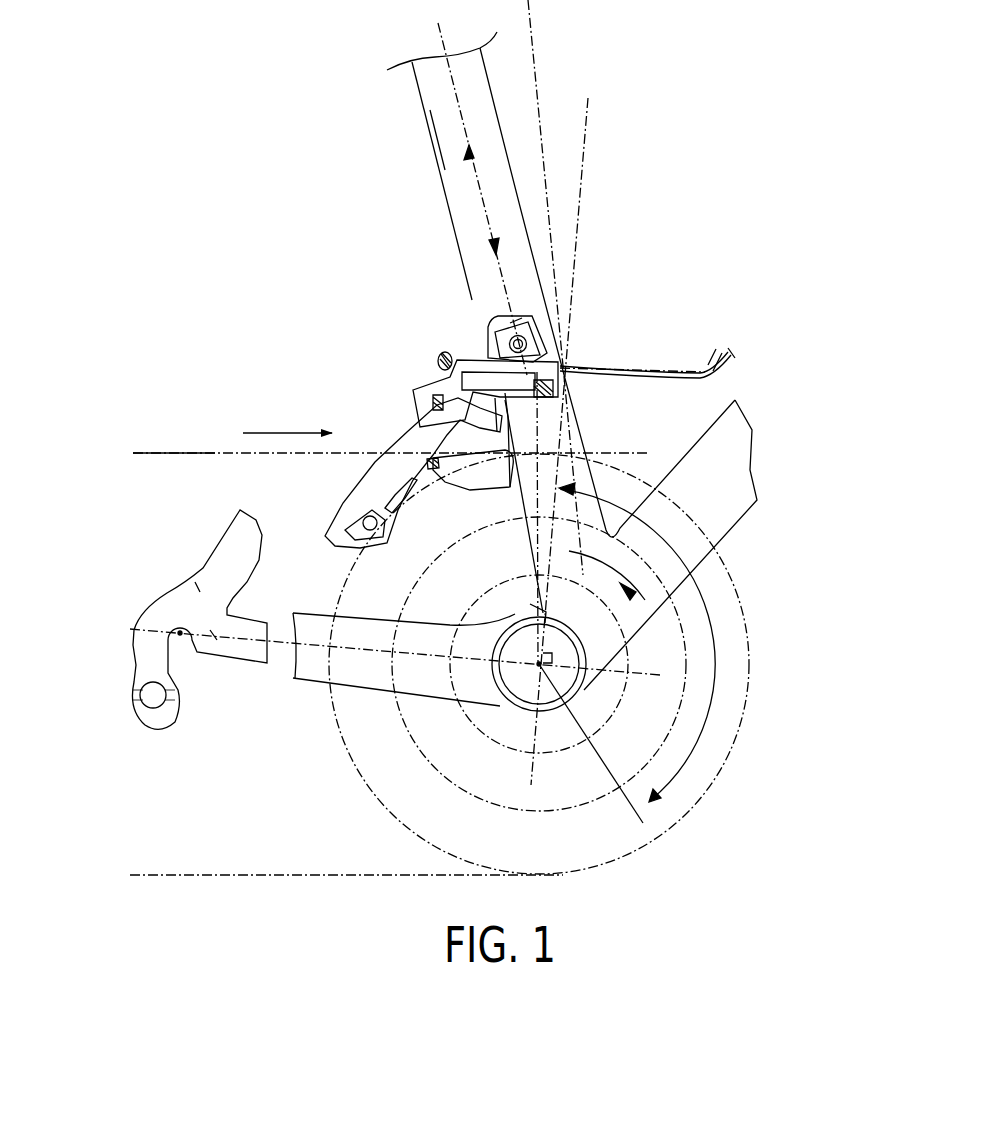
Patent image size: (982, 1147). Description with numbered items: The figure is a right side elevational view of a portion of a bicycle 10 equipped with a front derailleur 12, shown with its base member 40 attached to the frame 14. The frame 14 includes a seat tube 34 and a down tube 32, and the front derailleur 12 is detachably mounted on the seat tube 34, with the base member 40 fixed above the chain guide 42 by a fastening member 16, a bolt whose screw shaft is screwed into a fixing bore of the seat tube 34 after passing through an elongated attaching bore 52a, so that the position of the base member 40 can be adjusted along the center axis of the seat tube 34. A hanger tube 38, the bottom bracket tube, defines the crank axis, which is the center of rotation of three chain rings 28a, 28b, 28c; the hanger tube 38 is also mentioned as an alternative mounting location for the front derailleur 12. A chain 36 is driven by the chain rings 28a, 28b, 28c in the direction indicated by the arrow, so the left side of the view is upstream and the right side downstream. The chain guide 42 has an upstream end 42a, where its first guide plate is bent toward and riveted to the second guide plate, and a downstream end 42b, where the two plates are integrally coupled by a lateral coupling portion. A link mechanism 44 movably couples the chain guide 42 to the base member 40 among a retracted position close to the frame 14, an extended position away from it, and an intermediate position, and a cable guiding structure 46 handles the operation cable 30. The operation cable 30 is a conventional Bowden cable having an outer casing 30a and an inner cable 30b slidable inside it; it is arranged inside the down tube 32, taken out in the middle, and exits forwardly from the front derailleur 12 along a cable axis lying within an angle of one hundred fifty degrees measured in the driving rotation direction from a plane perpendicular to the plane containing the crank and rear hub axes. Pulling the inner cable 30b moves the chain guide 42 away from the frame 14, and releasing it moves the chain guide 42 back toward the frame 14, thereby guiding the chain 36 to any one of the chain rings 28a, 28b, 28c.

The bicycle 10 is at (398, 180).
The front derailleur 12 is at (335, 500).
The frame 14 is at (500, 105).
The fastening member 16 is at (490, 350).
The chain ring 28a is at (333, 745).
The chain ring 28b is at (397, 713).
The chain ring 28c is at (457, 720).
The operation cable 30 is at (660, 392).
The outer casing 30a is at (685, 370).
The inner cable 30b is at (722, 358).
The down tube 32 is at (685, 456).
The seat tube 34 is at (428, 126).
The chain 36 is at (210, 452).
The hanger tube 38 is at (537, 612).
The base member 40 is at (490, 345).
The chain guide 42 is at (345, 488).
The upstream end 42a is at (340, 530).
The downstream end 42b is at (480, 462).
The link mechanism 44 is at (435, 362).
The cable guiding structure 46 is at (528, 336).
The attaching bore 52a is at (513, 322).